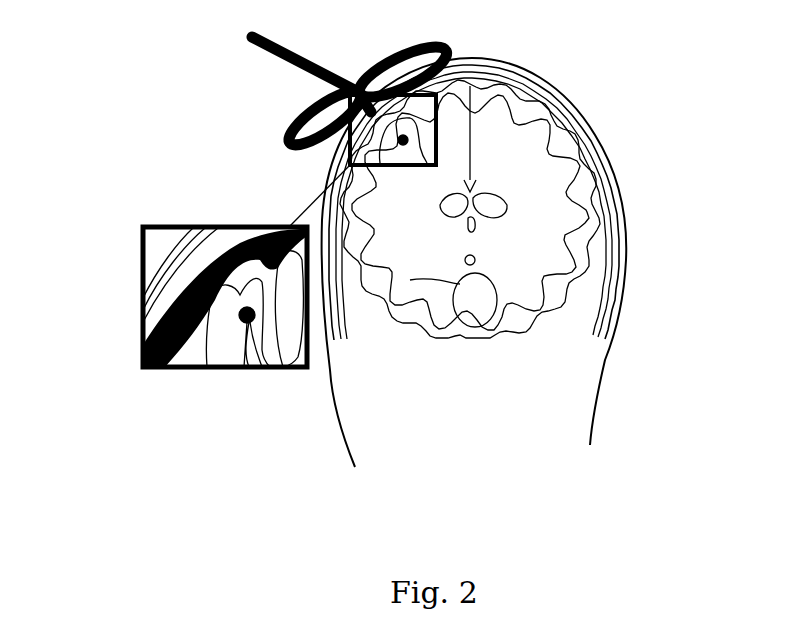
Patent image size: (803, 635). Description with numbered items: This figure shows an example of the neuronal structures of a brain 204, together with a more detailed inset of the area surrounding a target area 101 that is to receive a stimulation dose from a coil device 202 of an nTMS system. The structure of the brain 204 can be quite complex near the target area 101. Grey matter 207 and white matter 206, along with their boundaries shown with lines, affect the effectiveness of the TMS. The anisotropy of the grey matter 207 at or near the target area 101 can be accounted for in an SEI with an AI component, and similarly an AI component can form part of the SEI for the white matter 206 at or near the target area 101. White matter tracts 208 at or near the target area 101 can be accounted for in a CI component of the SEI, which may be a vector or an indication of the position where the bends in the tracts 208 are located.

The target area 101 is at (240, 322).
The coil device 202 is at (443, 48).
The brain 204 is at (603, 152).
The white matter 206 is at (553, 219).
The grey matter 207 is at (186, 356).
The white matter tracts 208 is at (266, 354).